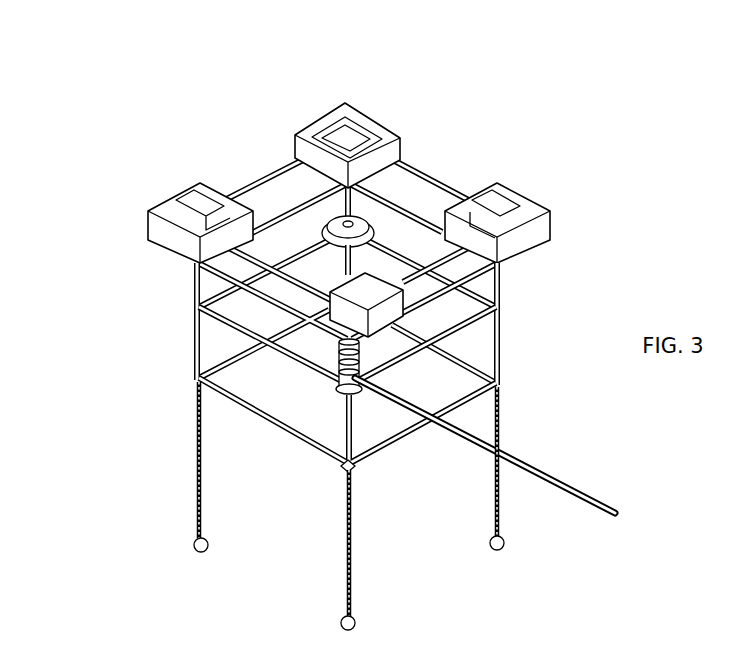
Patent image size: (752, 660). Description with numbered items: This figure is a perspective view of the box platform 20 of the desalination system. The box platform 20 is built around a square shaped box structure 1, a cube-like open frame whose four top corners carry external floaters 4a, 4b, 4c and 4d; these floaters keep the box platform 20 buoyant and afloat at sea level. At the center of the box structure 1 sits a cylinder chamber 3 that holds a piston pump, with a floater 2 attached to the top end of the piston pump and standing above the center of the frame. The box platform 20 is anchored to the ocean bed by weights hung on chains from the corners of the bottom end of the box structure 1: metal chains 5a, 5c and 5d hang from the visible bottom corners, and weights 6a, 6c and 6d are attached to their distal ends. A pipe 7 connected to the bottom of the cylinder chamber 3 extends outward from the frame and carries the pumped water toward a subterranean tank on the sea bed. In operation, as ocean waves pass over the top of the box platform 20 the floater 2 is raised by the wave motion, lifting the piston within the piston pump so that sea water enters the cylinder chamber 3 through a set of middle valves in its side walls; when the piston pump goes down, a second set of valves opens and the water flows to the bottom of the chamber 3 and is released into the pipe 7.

The box platform 20 is at (322, 330).
The box structure 1 is at (322, 269).
The floater 2 is at (322, 226).
The cylinder chamber 3 is at (333, 371).
The external floater 4a is at (148, 212).
The external floater 4b is at (310, 121).
The external floater 4c is at (532, 196).
The external floater 4d is at (296, 308).
The metal chain 5a is at (192, 476).
The metal chain 5c is at (487, 513).
The metal chain 5d is at (343, 563).
The weight 6a is at (192, 545).
The weight 6c is at (507, 543).
The weight 6d is at (338, 620).
The pipe 7 is at (545, 472).